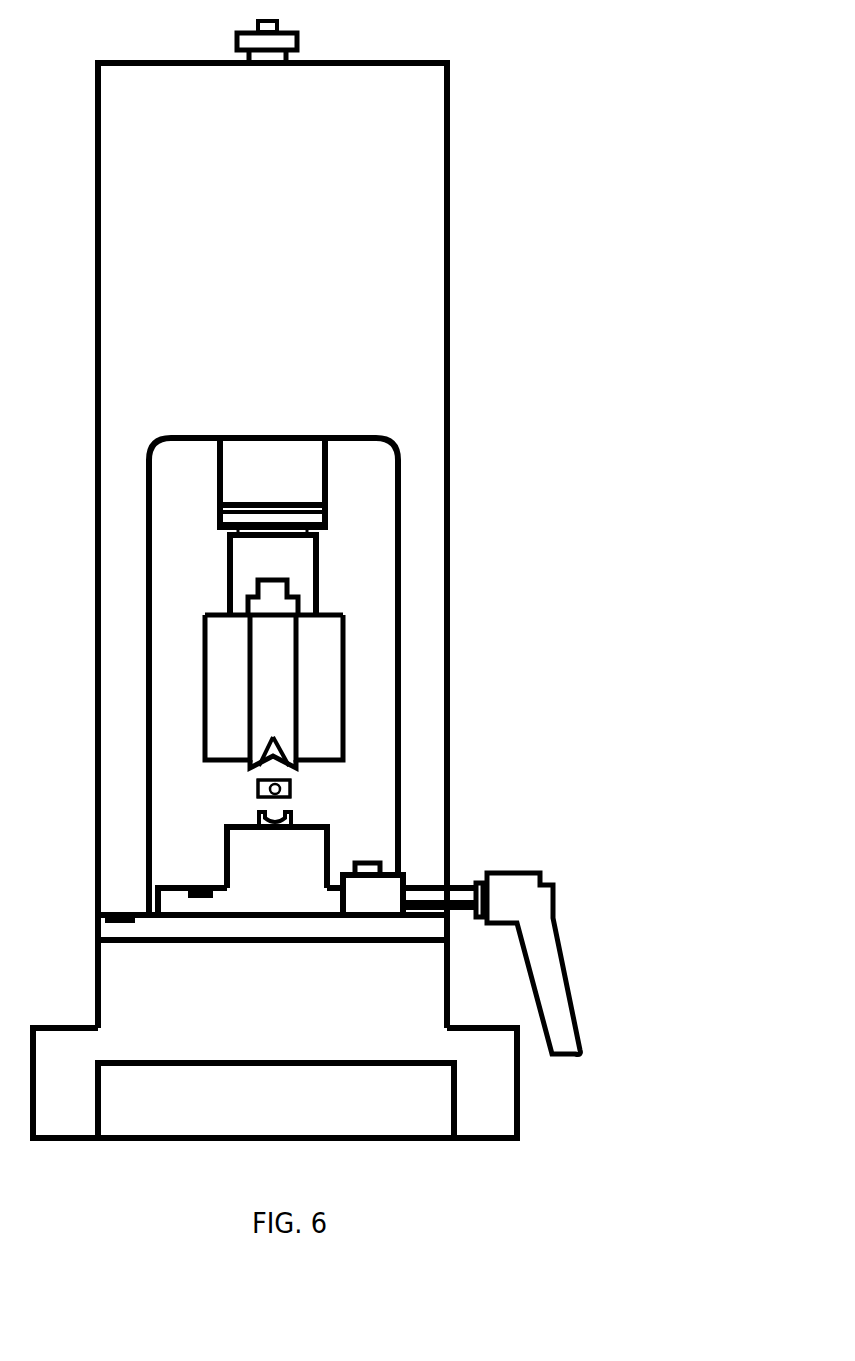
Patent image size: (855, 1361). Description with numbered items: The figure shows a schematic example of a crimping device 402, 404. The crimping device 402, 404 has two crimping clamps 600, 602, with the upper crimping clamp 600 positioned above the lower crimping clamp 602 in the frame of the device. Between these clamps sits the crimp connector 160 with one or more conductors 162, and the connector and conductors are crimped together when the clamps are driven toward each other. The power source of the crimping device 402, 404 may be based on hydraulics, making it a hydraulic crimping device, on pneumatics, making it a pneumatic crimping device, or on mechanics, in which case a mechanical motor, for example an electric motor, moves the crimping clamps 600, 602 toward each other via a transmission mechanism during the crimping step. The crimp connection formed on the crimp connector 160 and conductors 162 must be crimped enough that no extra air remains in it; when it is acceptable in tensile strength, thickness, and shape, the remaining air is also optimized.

The crimping device 402 is at (306, 579).
The crimping device 404 is at (418, 62).
The crimping clamp 600 is at (290, 719).
The crimping clamp 602 is at (288, 813).
The conductor 162 is at (258, 786).
The crimp connector 160 is at (258, 792).